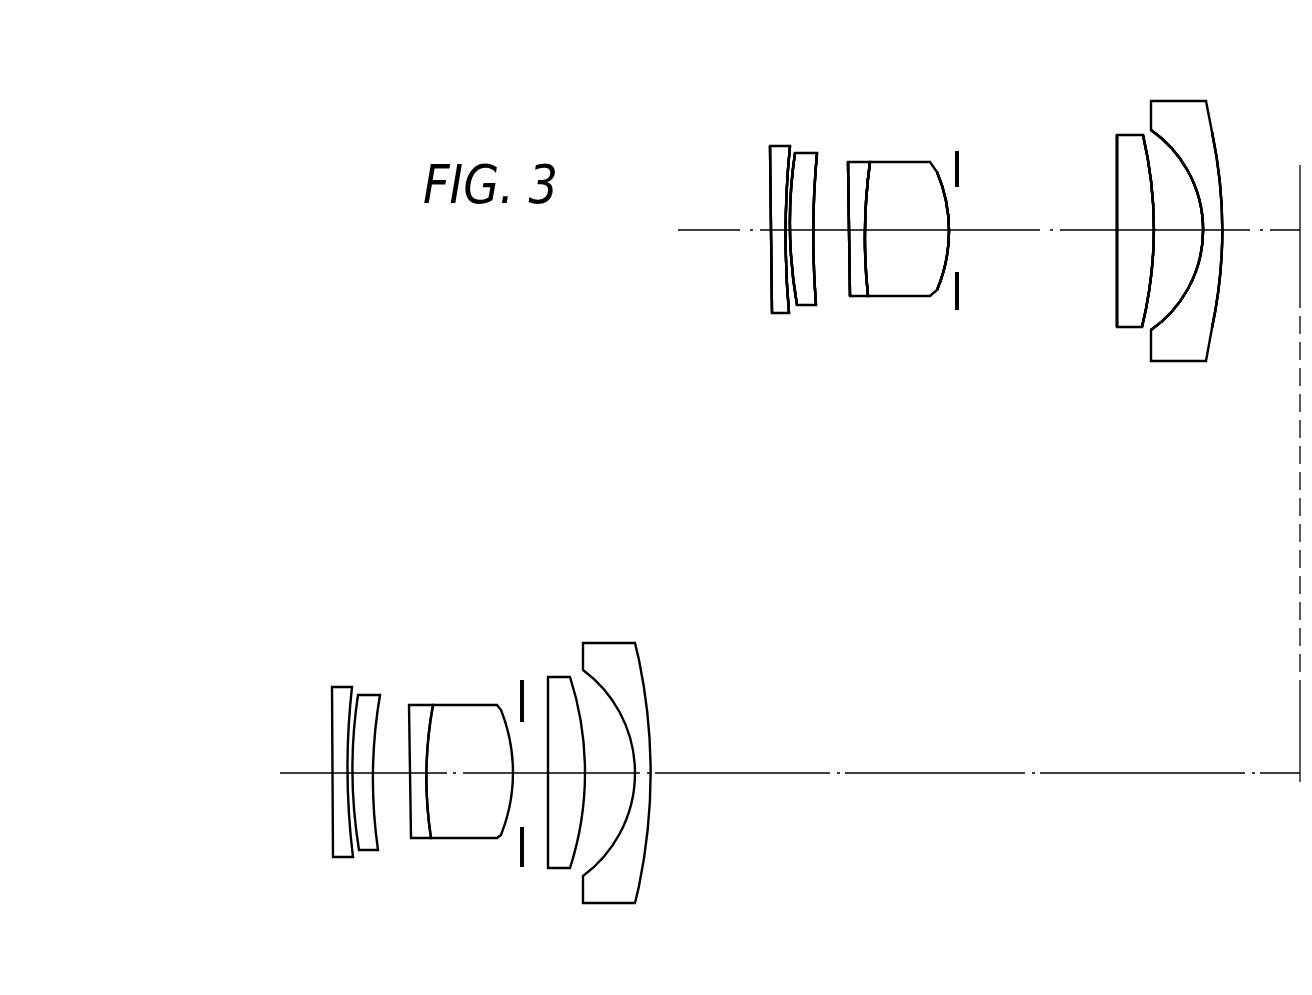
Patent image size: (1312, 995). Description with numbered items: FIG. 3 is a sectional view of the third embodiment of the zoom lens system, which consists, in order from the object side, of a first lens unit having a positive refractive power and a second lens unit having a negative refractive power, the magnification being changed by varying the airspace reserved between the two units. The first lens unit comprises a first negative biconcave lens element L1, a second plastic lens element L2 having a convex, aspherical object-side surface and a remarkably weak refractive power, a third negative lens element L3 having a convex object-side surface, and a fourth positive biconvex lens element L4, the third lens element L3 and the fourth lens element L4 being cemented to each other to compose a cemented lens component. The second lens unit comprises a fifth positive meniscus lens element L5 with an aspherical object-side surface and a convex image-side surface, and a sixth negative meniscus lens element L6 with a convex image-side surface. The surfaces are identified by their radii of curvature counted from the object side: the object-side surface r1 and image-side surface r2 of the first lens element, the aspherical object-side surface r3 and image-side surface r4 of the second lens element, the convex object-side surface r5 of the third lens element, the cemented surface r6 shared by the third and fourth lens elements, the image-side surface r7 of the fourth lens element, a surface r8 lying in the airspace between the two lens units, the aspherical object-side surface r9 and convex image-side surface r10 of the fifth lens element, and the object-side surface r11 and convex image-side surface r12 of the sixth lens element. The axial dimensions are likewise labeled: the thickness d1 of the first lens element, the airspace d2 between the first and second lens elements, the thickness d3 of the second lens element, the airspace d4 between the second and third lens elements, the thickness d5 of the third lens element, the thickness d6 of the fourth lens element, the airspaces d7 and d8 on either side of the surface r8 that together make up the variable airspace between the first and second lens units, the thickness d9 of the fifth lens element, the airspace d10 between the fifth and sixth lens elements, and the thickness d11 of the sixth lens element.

The first lens element L1 is at (779, 315).
The second lens element L2 is at (804, 310).
The third lens element L3 is at (860, 300).
The fourth lens element L4 is at (893, 300).
The fifth lens element L5 is at (1118, 330).
The sixth lens element L6 is at (1177, 364).
The radius of curvature r1 is at (770, 170).
The radius of curvature r2 is at (788, 163).
The radius of curvature r3 is at (797, 170).
The radius of curvature r4 is at (813, 188).
The radius of curvature r5 is at (848, 175).
The radius of curvature r6 is at (869, 172).
The radius of curvature r7 is at (935, 175).
The radius of curvature r8 is at (958, 177).
The radius of curvature r9 is at (1117, 158).
The radius of curvature r10 is at (1143, 153).
The radius of curvature r11 is at (1165, 142).
The radius of curvature r12 is at (1213, 135).
The thickness d1 is at (783, 236).
The airspace d2 is at (787, 235).
The thickness d3 is at (801, 231).
The airspace d4 is at (827, 233).
The thickness d5 is at (855, 228).
The thickness d6 is at (902, 233).
The airspace d7 is at (950, 233).
The airspace d8 is at (1027, 232).
The thickness d9 is at (1132, 233).
The airspace d10 is at (1183, 233).
The thickness d11 is at (1212, 233).